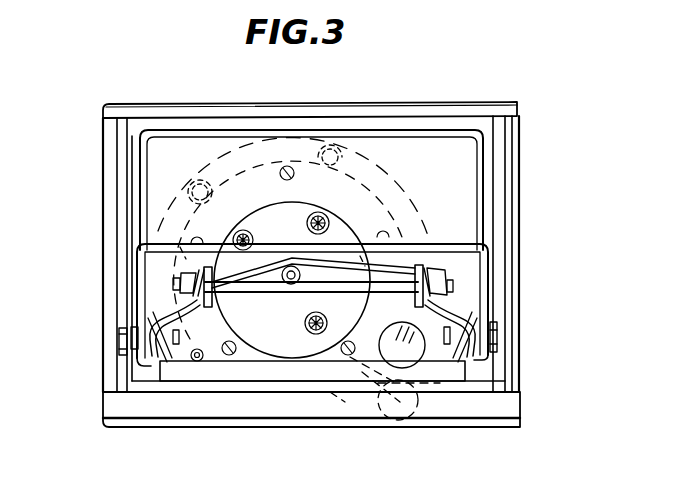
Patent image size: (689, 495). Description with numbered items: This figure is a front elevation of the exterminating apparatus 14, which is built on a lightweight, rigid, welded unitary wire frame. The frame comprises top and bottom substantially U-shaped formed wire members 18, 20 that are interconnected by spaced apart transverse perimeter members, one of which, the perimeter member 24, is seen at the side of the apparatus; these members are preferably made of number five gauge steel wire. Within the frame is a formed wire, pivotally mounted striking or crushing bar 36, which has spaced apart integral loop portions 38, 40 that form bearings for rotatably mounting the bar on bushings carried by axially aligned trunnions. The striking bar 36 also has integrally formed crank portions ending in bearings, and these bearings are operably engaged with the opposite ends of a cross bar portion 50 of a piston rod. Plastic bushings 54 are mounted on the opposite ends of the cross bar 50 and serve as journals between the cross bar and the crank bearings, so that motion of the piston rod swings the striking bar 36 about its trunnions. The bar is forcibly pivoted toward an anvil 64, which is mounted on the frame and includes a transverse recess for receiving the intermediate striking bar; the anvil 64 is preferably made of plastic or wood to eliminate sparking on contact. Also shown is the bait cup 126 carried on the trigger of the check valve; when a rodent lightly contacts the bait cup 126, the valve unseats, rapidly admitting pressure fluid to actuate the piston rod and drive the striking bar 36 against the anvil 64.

The exterminating apparatus 14 is at (538, 157).
The top formed wire member 18 is at (114, 108).
The bottom formed wire member 20 is at (228, 424).
The transverse perimeter member 24 is at (518, 183).
The striking bar 36 is at (405, 125).
The loop portion 38 is at (478, 370).
The loop portion 40 is at (150, 370).
The cross bar portion 50 is at (245, 286).
The plastic bushings 54 is at (166, 280).
The anvil 64 is at (187, 386).
The bait cup 126 is at (447, 352).